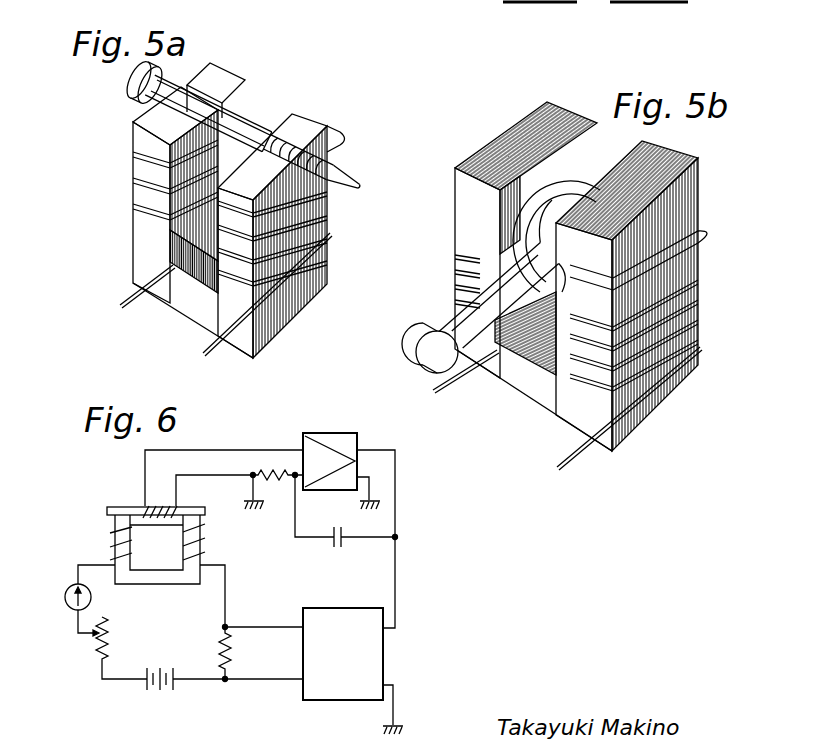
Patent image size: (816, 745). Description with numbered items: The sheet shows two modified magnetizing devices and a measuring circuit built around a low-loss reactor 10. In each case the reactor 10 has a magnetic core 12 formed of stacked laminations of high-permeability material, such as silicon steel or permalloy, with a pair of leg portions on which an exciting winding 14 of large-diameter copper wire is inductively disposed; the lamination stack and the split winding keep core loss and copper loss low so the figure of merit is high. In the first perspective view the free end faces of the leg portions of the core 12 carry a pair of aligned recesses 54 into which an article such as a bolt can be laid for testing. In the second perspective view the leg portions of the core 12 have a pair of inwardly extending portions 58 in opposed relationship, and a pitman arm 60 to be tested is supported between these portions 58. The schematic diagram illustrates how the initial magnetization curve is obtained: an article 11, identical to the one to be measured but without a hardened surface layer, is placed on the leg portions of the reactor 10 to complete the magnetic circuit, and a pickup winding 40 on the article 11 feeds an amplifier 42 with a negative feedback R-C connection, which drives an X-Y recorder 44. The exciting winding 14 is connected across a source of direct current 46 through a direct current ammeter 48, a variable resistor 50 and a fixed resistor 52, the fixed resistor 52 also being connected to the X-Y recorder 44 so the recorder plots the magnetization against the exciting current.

In FIG. 5A, the low-loss reactor 10 is at (118, 198).
In FIG. 5B, the low-loss reactor 10 is at (740, 189).
In FIG. 6, the low-loss reactor 10 is at (167, 563).
In FIG. 6, the article 11 is at (136, 506).
In FIG. 5A, the magnetic core 12 is at (290, 308).
In FIG. 5B, the magnetic core 12 is at (663, 363).
In FIG. 5A, the exciting winding 14 is at (204, 343).
In FIG. 5B, the exciting winding 14 is at (708, 236).
In FIG. 6, the exciting winding 14 is at (110, 545).
In FIG. 6, the pickup winding 40 is at (163, 505).
In FIG. 6, the amplifier 42 is at (330, 425).
In FIG. 6, the X-Y recorder 44 is at (383, 658).
In FIG. 6, the source of direct current 46 is at (181, 694).
In FIG. 6, the direct current ammeter 48 is at (65, 597).
In FIG. 6, the variable resistor 50 is at (121, 648).
In FIG. 6, the fixed resistor 52 is at (261, 653).
In FIG. 5A, the aligned recesses 54 is at (217, 120).
In FIG. 5B, the inwardly extending portions 58 is at (580, 260).
In FIG. 5B, the pitman arm 60 is at (600, 172).